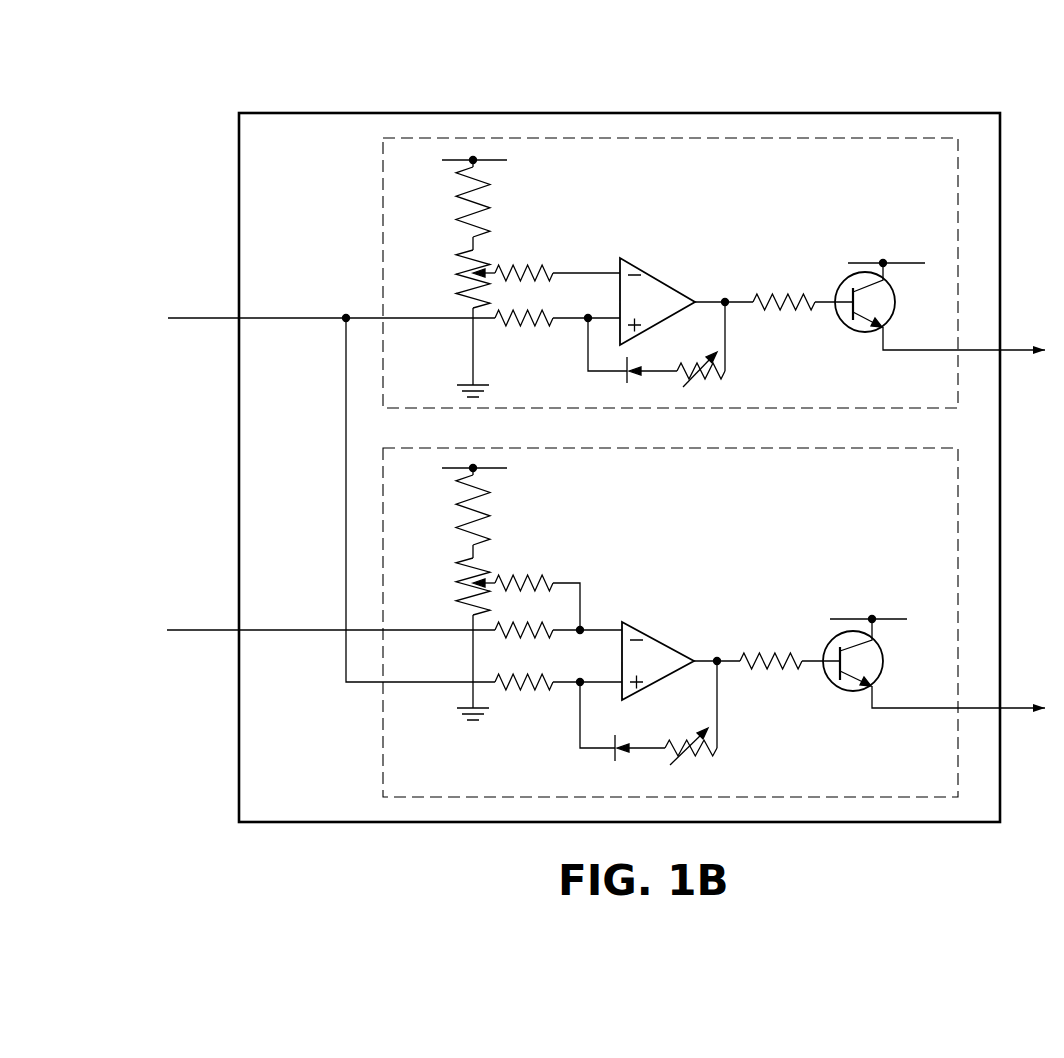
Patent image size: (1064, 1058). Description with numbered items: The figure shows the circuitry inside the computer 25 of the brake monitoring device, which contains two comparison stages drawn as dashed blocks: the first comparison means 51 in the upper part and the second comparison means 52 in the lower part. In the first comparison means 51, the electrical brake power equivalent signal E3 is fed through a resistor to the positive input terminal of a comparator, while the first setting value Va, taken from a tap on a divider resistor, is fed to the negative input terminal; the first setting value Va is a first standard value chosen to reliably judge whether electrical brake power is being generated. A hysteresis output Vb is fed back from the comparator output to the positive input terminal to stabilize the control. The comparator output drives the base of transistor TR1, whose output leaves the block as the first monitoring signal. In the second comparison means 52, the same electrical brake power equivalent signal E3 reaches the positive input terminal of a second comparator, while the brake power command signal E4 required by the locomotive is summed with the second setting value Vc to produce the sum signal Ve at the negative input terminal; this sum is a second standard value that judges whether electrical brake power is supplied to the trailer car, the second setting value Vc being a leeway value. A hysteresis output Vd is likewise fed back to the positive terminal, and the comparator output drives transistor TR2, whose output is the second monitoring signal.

The computer 25 is at (655, 113).
The first comparison means 51 is at (880, 138).
The second comparison means 52 is at (960, 470).
The electrical brake power equivalent signal E3 is at (305, 318).
The brake power command signal E4 is at (305, 630).
The first setting value Va is at (577, 273).
The output of hysteresis part Vb is at (657, 371).
The second setting value Vc is at (570, 580).
The output of hysteresis part Vd is at (646, 746).
The sum signal Ve is at (603, 630).
The transistor TR1 is at (847, 338).
The transistor TR2 is at (840, 690).